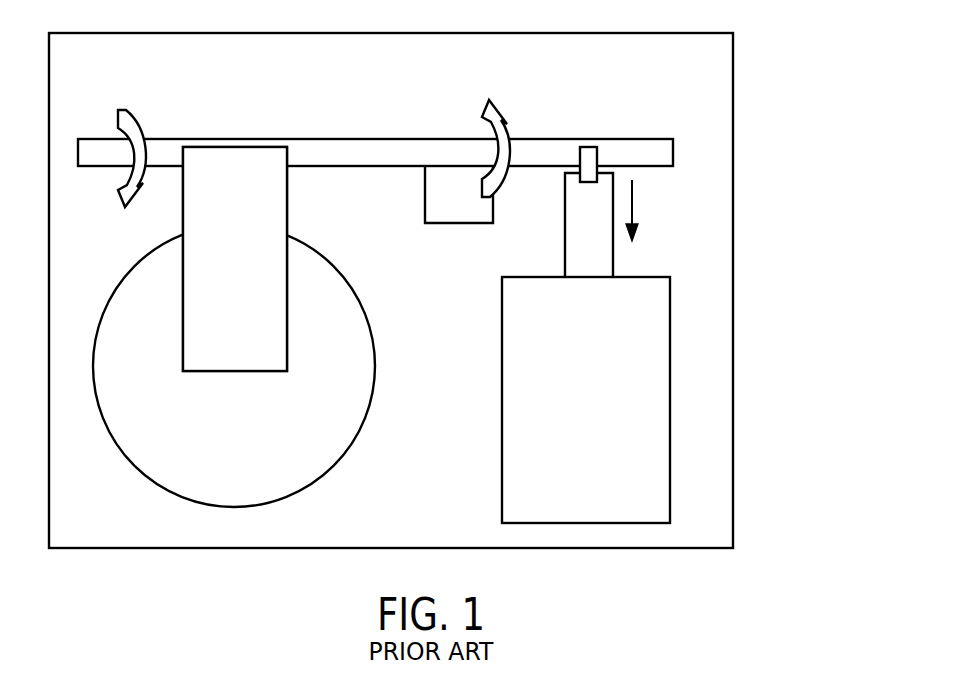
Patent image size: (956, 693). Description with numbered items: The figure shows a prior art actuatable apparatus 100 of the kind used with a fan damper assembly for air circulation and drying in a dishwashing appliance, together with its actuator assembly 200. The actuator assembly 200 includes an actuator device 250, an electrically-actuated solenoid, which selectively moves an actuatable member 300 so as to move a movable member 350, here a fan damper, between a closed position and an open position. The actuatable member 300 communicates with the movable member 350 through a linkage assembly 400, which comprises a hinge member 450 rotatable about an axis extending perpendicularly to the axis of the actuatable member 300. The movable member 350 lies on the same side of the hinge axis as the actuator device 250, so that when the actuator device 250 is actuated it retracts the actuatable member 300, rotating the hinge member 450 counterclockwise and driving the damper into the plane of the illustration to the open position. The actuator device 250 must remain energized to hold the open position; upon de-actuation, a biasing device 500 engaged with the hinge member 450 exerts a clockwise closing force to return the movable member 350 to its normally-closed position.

The actuatable apparatus 100 is at (779, 122).
The actuator assembly 200 is at (703, 298).
The actuator device 250 is at (653, 430).
The actuatable member 300 is at (600, 269).
The movable member 350 is at (356, 365).
The linkage assembly 400 is at (242, 125).
The hinge member 450 is at (544, 153).
The biasing device 500 is at (442, 184).